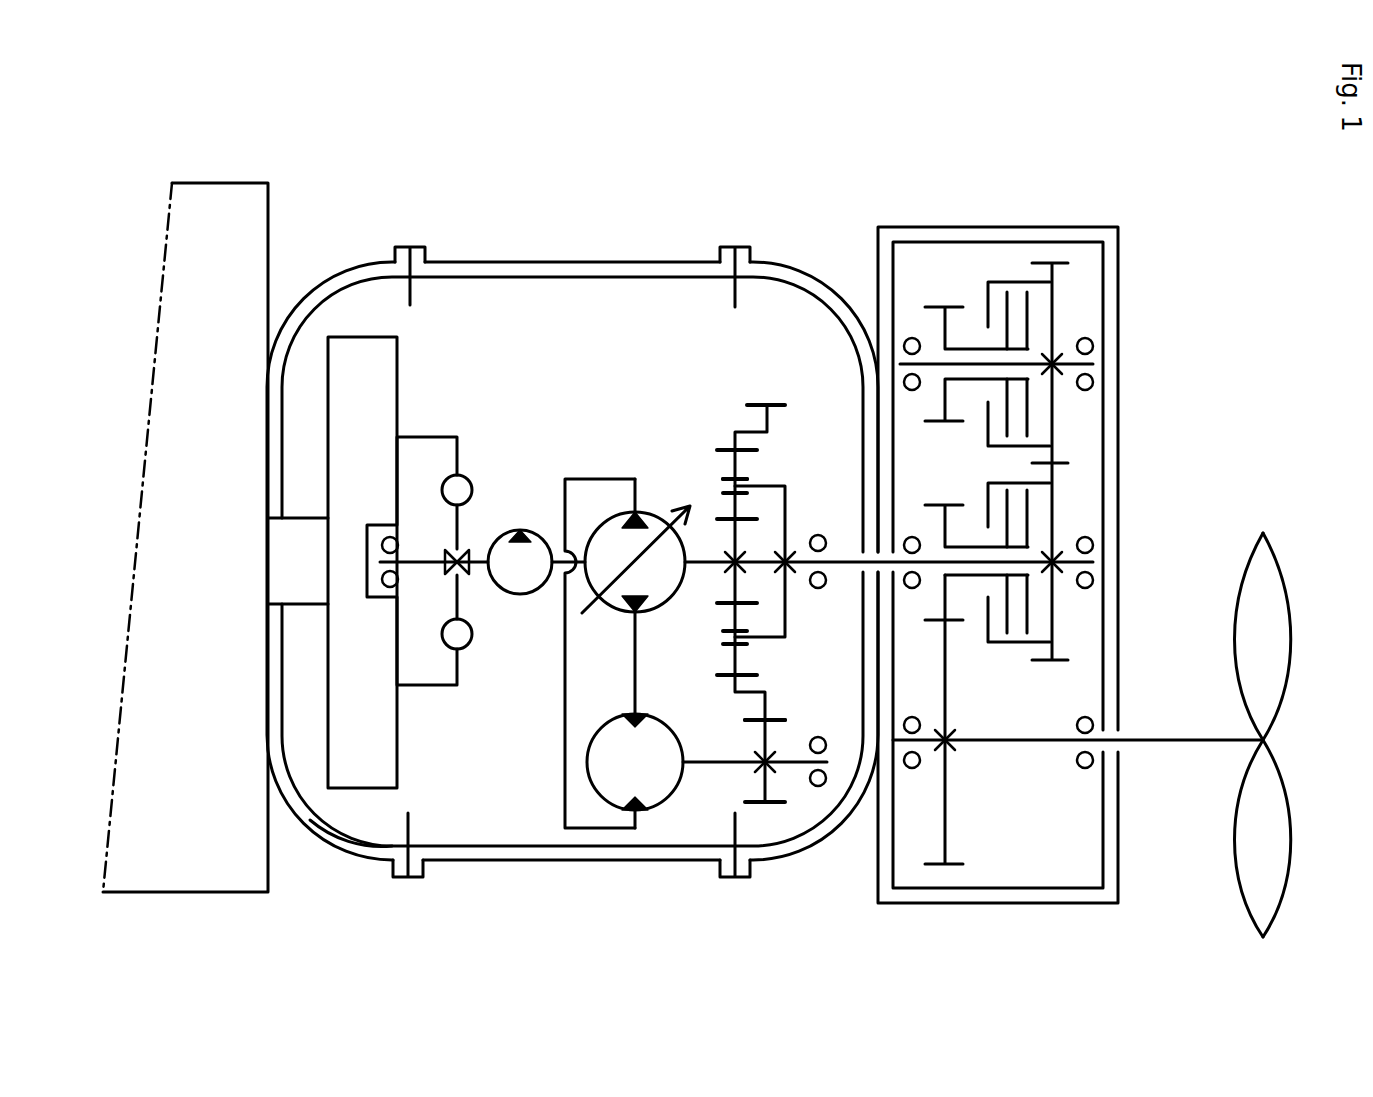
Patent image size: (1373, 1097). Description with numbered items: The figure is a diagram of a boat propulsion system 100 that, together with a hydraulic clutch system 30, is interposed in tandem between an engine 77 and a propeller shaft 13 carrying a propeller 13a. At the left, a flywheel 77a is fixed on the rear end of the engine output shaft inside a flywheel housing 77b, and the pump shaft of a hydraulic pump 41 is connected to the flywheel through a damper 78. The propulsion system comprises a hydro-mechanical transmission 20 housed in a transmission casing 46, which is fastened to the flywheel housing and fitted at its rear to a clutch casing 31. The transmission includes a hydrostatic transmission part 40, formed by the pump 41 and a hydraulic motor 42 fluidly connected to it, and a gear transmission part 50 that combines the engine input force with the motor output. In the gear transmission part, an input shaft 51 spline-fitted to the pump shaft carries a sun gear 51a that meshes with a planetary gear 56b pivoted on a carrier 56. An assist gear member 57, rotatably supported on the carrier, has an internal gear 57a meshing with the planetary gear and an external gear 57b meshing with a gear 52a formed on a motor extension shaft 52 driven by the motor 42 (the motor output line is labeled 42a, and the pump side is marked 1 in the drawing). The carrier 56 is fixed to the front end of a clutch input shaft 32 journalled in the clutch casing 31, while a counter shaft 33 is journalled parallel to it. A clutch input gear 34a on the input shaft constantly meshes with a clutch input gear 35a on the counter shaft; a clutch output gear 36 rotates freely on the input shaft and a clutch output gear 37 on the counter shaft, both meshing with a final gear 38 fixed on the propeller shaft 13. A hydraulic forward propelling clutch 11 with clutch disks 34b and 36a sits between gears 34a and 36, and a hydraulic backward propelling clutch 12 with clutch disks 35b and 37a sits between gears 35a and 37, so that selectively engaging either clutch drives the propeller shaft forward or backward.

The boat propulsion system 100 is at (755, 138).
The engine 77 is at (280, 196).
The flywheel 77a is at (398, 752).
The flywheel housing 77b is at (345, 852).
The damper 78 is at (474, 680).
The hydraulic pump 1 is at (525, 523).
The hydro-mechanical transmission (HMT) 20 is at (625, 343).
The hydrostatic transmission part (HST) 40 is at (635, 415).
The hydraulic pump 41 is at (660, 505).
The hydraulic motor 42 is at (652, 712).
The output shaft of motor 42 42a is at (712, 780).
The transmission casing 46 is at (565, 862).
The gear transmission part 50 is at (708, 415).
The input shaft 51 is at (716, 578).
The sun gear 51a is at (745, 535).
The motor extension shaft 52 is at (800, 745).
The gear 52a is at (760, 737).
The carrier 56 is at (787, 500).
The planetary gear 56b is at (738, 470).
The assist gear member 57 is at (776, 430).
The internal gear 57a is at (728, 445).
The external gear 57b is at (771, 404).
The hydraulic clutch system 30 is at (1070, 523).
The clutch casing 31 is at (1120, 238).
The hydraulic forward propelling clutch 11 is at (984, 470).
The hydraulic backward propelling clutch 12 is at (984, 270).
The propeller shaft 13 is at (1018, 745).
The propeller 13a is at (1232, 865).
The clutch input shaft 32 is at (1062, 580).
The counter shaft 33 is at (1068, 360).
The clutch input gear 34a is at (1028, 502).
The clutch disk 34b is at (1020, 525).
The clutch input gear 35a is at (1028, 408).
The clutch disk 35b is at (1020, 432).
The clutch output gear 36 is at (945, 600).
The clutch disk 36a is at (1028, 623).
The clutch output gear 37 is at (945, 330).
The clutch disk 37a is at (1028, 308).
The final gear 38 is at (945, 672).